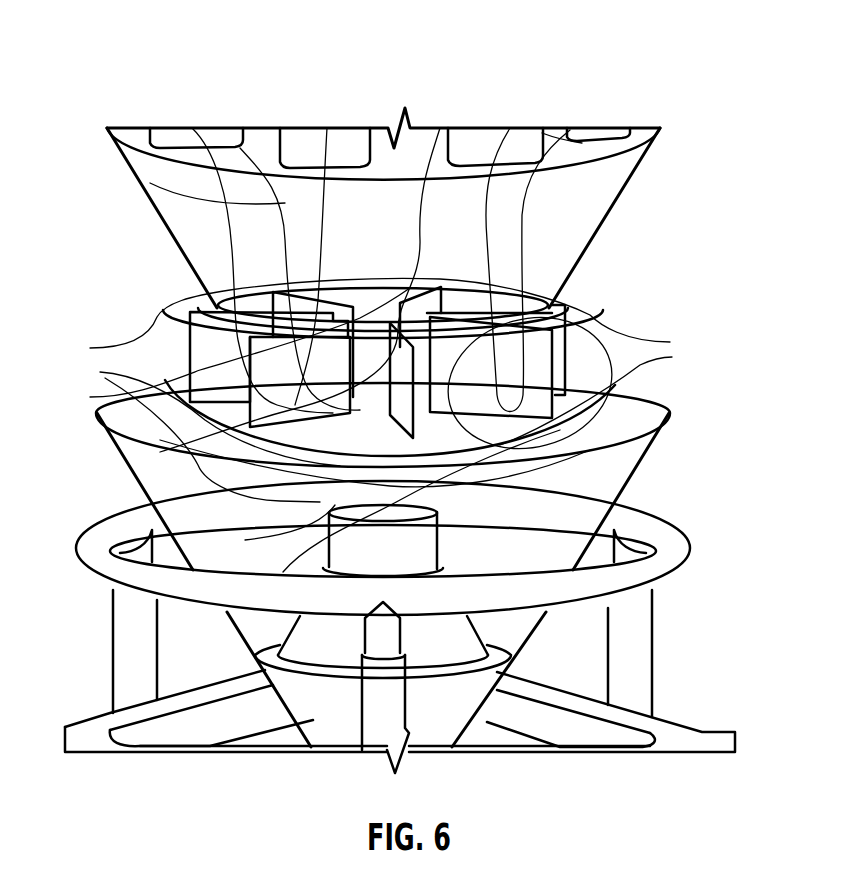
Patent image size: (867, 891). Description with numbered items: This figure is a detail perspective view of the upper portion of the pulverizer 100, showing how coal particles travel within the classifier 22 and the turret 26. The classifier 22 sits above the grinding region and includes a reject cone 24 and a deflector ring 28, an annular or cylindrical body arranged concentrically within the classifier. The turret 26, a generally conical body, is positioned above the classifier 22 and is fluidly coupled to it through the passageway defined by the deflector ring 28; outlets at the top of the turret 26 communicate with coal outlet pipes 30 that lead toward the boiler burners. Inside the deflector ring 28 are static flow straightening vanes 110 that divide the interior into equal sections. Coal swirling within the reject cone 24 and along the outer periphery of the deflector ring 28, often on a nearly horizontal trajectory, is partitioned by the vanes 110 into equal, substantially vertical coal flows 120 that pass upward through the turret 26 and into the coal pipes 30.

The pulverizer 100 is at (166, 56).
The turret 26 is at (613, 178).
The coal outlet pipes 30 is at (323, 136).
The coal flows 120 is at (393, 188).
The flow straightening vanes 110 is at (427, 370).
The deflector ring 28 is at (223, 310).
The classifier 22 is at (676, 368).
The reject cone 24 is at (622, 469).